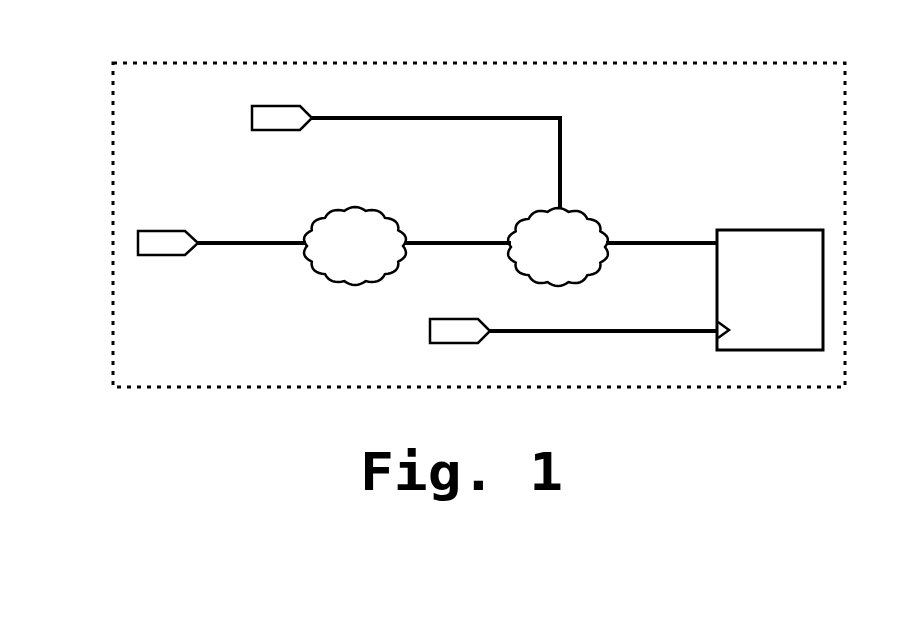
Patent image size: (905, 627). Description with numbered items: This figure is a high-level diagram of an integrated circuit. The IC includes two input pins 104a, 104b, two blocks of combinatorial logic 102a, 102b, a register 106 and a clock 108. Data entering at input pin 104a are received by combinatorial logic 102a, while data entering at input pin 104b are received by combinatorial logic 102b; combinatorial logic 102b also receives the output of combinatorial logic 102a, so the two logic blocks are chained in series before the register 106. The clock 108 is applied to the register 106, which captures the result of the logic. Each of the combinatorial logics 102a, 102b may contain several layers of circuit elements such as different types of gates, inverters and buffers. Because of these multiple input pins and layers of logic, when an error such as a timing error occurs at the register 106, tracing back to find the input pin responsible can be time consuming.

The combinatorial logic 102a is at (382, 212).
The combinatorial logic 102b is at (588, 214).
The input pin 104a is at (138, 242).
The input pin 104b is at (252, 116).
The register 106 is at (773, 230).
The clock 108 is at (574, 337).